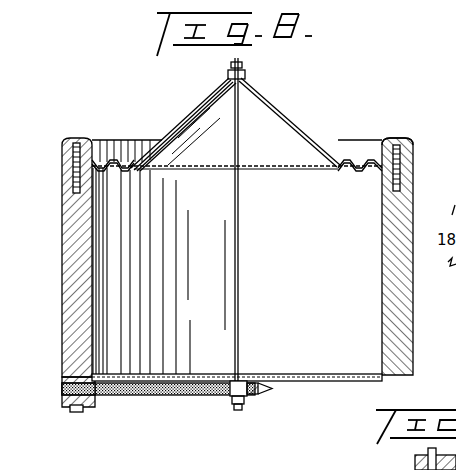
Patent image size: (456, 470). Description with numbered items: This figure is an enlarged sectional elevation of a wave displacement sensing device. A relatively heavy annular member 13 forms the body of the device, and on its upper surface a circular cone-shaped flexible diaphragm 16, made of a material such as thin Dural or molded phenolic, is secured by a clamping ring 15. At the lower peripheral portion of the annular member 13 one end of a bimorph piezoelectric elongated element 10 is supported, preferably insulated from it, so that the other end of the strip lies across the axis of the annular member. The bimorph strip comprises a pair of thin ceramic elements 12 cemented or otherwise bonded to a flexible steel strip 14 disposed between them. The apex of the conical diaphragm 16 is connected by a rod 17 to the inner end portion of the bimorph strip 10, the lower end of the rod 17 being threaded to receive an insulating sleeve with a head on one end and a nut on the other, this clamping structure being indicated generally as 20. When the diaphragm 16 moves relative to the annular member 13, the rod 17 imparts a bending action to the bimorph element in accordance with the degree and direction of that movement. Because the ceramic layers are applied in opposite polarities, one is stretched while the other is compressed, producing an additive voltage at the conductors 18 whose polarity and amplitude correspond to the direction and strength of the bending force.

The bimorph piezoelectric elongated element 10 is at (195, 395).
The ceramic elements 12 is at (271, 391).
The annular member 13 is at (84, 338).
The flexible steel strip 14 is at (159, 399).
The clamping ring 15 is at (414, 143).
The cone-shaped flexible diaphragm 16 is at (323, 148).
The rod 17 is at (239, 211).
The conductors 18 is at (52, 370).
The clamping structure 20 is at (243, 379).